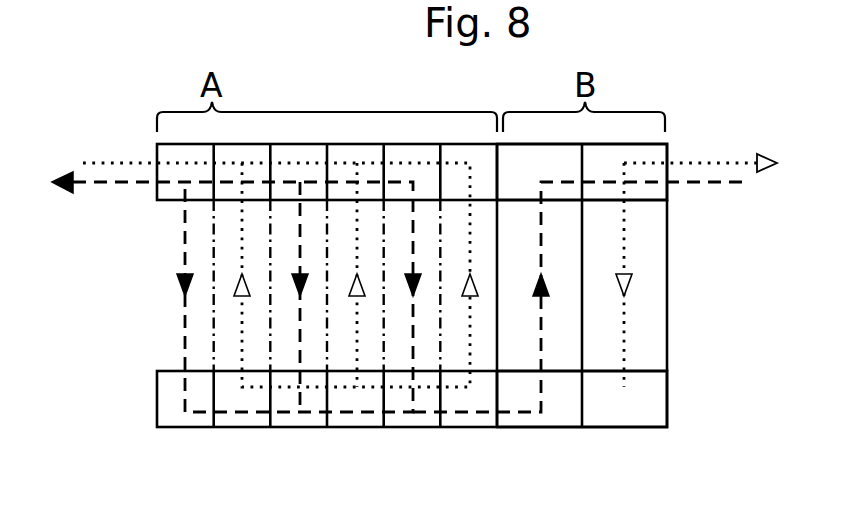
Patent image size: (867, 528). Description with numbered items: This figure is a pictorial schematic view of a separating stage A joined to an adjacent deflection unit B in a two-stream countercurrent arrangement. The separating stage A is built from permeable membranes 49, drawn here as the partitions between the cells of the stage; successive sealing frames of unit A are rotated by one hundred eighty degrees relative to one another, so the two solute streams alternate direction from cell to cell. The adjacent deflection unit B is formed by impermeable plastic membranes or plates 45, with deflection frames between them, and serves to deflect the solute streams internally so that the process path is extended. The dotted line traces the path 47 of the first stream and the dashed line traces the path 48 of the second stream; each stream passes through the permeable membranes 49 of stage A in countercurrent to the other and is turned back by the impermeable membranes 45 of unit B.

The impermeable plastic membranes or plates 45 is at (667, 413).
The path for first stream 47 is at (705, 160).
The path for second stream 48 is at (710, 186).
The permeable membranes 49 is at (270, 345).